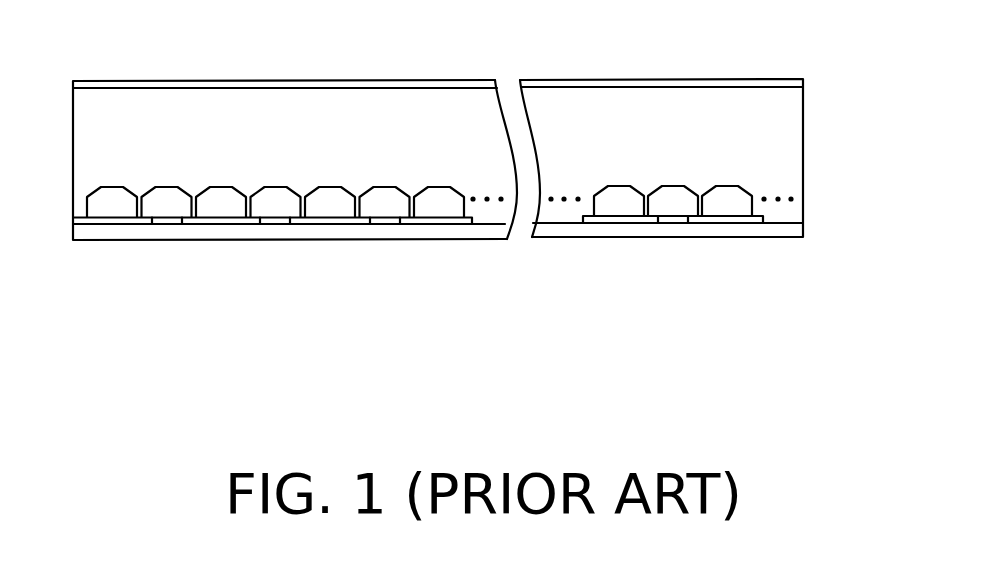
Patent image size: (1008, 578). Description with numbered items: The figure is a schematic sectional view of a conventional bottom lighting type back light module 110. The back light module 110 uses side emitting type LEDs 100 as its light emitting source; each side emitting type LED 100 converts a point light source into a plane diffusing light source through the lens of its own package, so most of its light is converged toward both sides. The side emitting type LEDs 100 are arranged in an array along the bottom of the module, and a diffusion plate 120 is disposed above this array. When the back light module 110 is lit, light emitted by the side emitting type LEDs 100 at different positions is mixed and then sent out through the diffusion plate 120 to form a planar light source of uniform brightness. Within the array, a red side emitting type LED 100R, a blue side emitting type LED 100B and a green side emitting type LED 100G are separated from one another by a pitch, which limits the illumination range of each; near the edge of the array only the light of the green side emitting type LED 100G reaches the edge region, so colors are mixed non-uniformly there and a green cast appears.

The back light module 110 is at (469, 181).
The diffusion plate 120 is at (757, 79).
The side emitting type LED 100 is at (672, 207).
The red side emitting type LED 100R is at (113, 212).
The blue side emitting type LED 100B is at (166, 210).
The green side emitting type LED 100G is at (272, 210).